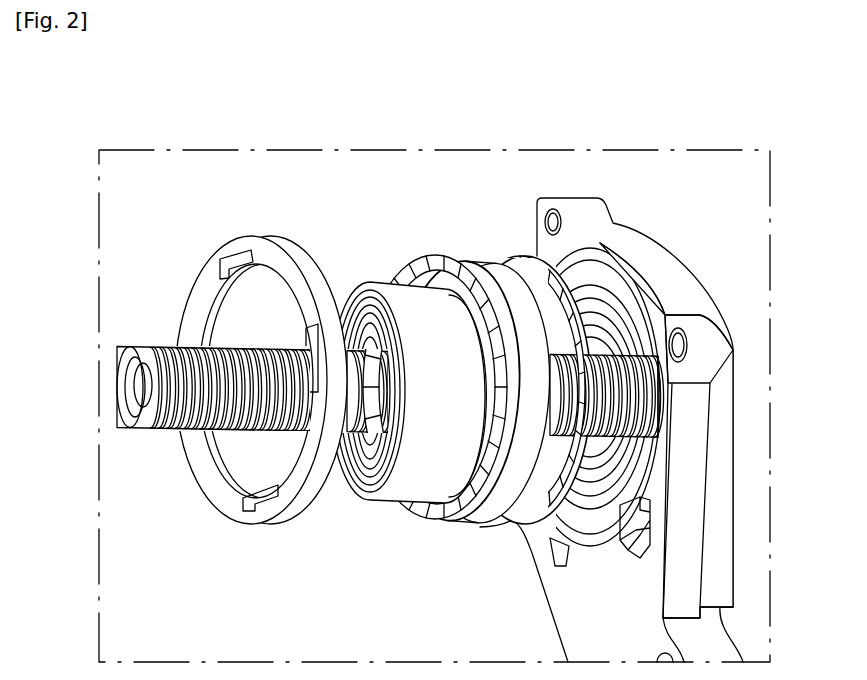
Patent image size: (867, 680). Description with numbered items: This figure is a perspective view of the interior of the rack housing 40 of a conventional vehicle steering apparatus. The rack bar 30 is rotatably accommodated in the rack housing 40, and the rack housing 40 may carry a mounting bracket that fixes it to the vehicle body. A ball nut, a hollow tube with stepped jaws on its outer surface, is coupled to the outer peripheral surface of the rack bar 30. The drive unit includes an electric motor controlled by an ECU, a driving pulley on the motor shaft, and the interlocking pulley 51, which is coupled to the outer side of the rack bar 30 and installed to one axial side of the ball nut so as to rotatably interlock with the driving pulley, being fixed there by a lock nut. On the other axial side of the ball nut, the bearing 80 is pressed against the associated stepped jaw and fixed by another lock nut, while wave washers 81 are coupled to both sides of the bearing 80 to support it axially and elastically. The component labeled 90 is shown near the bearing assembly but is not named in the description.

The rack bar 30 is at (165, 347).
The rack housing 40 is at (733, 300).
The interlocking pulley 51 is at (418, 303).
The bearing 80 is at (530, 318).
The wave washers 81 is at (527, 308).
The retaining ring 90 is at (288, 248).